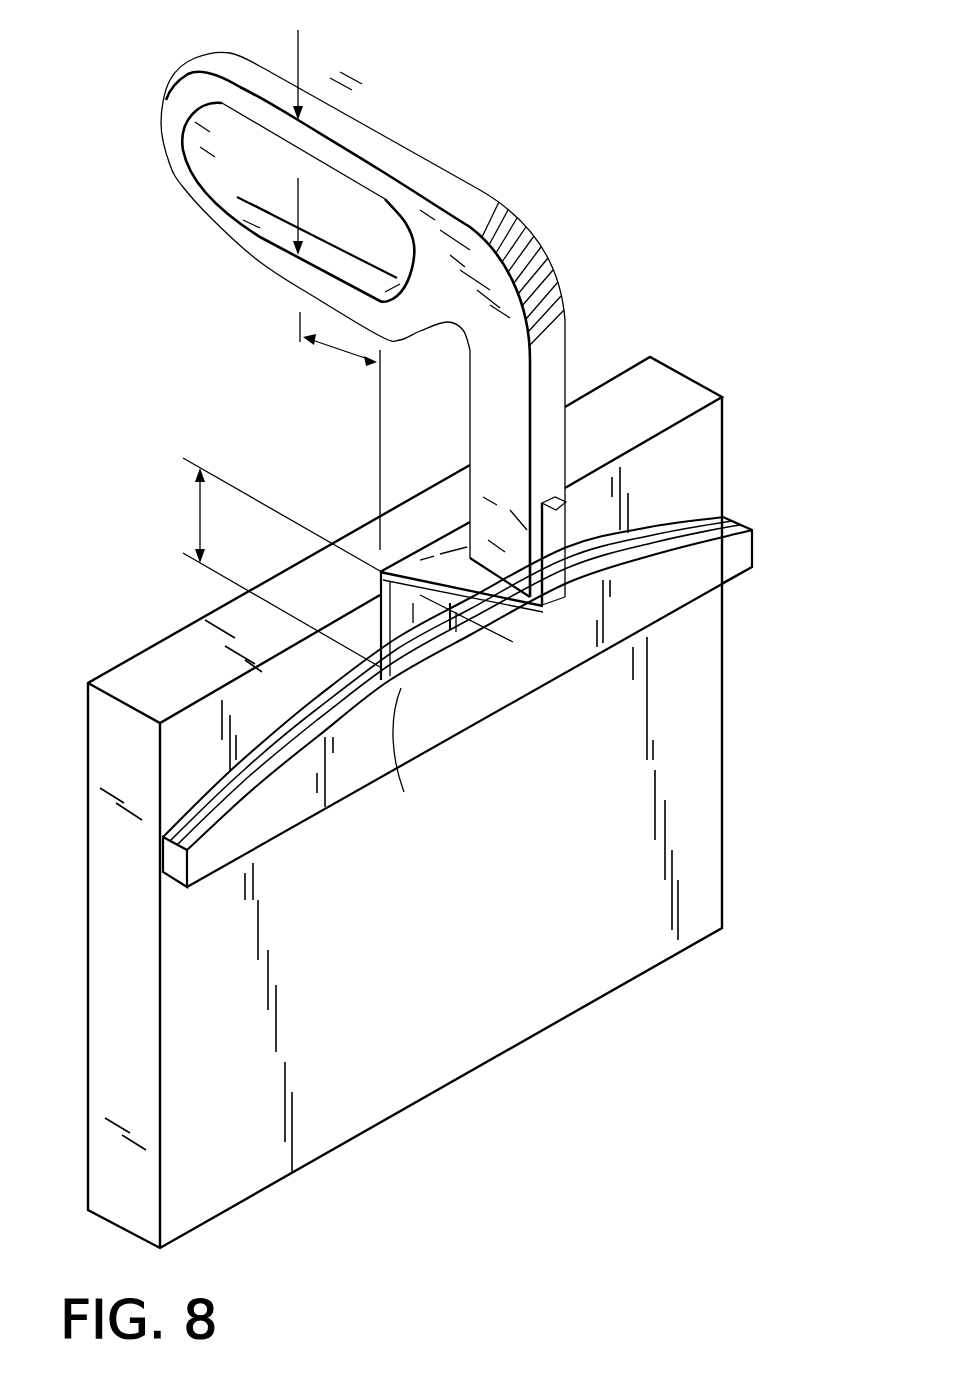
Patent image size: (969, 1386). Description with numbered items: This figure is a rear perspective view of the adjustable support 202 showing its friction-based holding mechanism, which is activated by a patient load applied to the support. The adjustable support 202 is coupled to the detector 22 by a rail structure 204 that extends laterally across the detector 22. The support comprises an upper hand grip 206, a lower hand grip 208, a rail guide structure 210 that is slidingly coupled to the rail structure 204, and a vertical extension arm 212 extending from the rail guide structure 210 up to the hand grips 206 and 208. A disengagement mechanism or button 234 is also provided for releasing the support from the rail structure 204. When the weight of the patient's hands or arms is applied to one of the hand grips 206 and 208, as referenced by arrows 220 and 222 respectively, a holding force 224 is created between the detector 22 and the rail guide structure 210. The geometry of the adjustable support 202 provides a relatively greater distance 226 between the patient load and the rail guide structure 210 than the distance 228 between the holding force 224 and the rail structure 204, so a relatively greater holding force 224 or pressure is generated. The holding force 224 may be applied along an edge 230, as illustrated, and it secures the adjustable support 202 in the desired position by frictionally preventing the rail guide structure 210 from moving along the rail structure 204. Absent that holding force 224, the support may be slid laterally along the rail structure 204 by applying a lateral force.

The detector 22 is at (347, 1117).
The adjustable support 202 is at (381, 416).
The rail structure 204 is at (264, 806).
The upper hand grip 206 is at (256, 76).
The lower hand grip 208 is at (238, 244).
The rail guide structure 210 is at (402, 675).
The vertical extension arm 212 is at (570, 358).
The arrow (patient load on upper hand grip) 220 is at (300, 64).
The arrow (patient load on lower hand grip) 222 is at (300, 198).
The holding force 224 is at (485, 633).
The distance (patient load to rail guide structure) 226 is at (337, 431).
The distance (holding force to rail structure) 228 is at (198, 520).
The edge 230 is at (440, 530).
The disengagement mechanism or button 234 is at (417, 590).